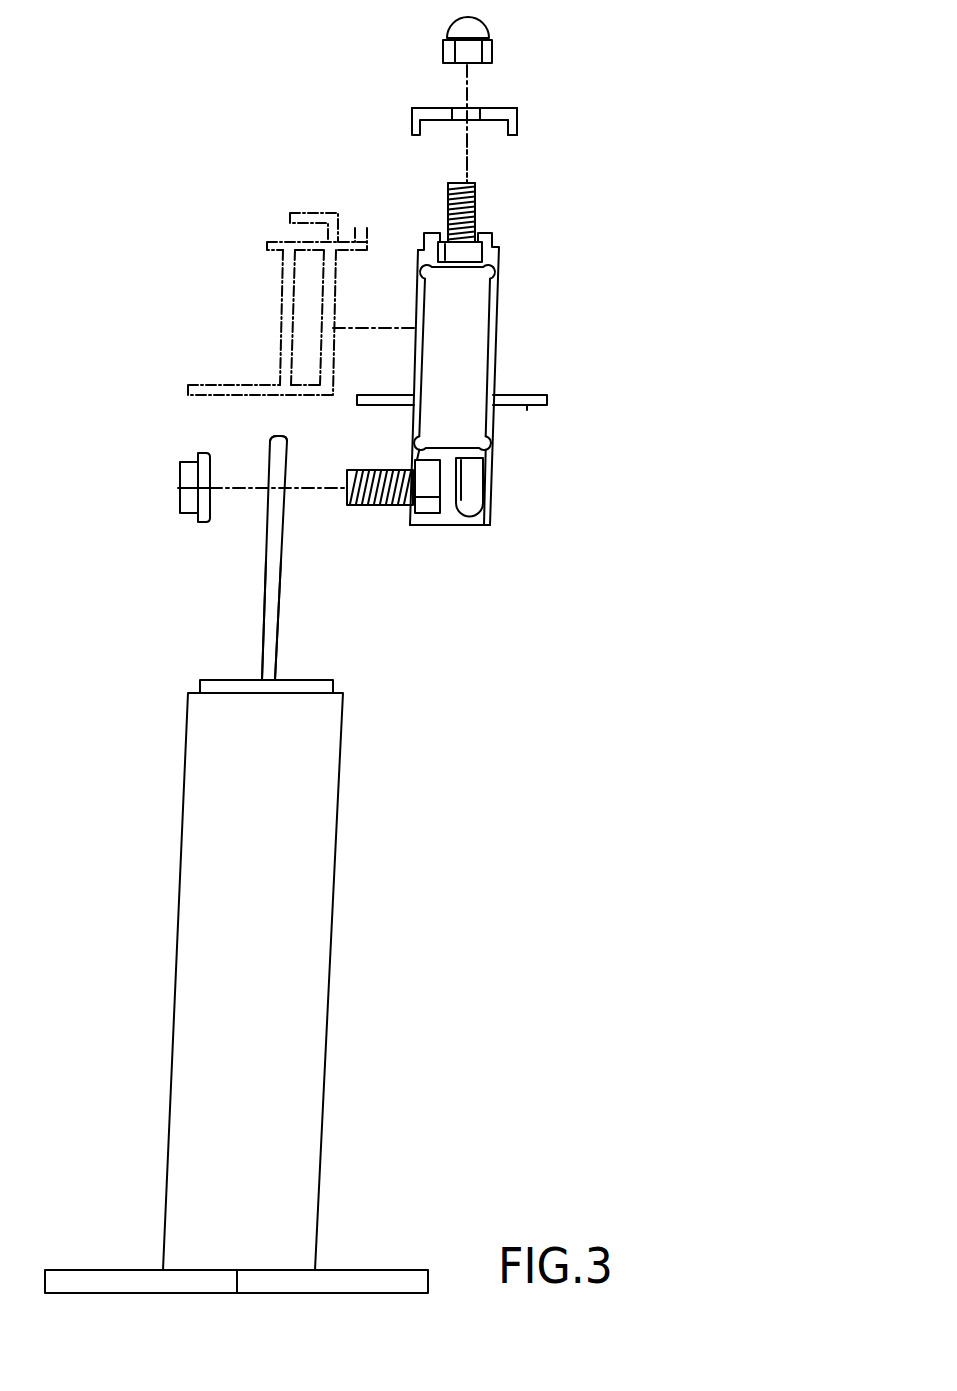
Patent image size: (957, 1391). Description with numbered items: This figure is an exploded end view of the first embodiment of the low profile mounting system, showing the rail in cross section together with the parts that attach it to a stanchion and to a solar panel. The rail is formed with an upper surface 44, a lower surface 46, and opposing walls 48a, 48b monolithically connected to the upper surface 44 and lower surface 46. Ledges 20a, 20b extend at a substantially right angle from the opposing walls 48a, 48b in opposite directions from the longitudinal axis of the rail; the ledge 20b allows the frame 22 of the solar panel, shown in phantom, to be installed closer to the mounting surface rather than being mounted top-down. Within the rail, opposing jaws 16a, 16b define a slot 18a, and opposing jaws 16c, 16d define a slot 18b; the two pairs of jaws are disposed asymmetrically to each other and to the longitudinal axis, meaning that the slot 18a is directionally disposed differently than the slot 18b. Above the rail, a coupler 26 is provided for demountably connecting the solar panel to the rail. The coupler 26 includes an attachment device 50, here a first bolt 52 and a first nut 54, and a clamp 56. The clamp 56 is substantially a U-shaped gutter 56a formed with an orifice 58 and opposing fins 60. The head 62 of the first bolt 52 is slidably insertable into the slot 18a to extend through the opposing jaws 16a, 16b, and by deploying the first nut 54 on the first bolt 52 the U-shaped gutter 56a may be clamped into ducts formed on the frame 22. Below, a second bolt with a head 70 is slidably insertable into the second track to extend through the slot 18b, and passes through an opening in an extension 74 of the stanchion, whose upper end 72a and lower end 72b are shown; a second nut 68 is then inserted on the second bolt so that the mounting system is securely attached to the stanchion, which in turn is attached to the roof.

The coupler 26 is at (576, 103).
The first nut 54 is at (487, 24).
The clamp 56 is at (413, 109).
The U-shaped gutter 56a is at (505, 108).
The orifice 58 is at (460, 110).
The opposing fins 60 is at (517, 119).
The first bolt 52 is at (464, 180).
The attachment device 50 is at (478, 203).
The upper surface 44 is at (483, 240).
The head of first bolt 62 is at (455, 260).
The opposing jaw 16a is at (493, 236).
The opposing jaw 16b is at (440, 232).
The opposing jaw 16c is at (412, 462).
The opposing jaw 16d is at (403, 525).
The slot 18a is at (500, 262).
The slot 18b is at (432, 527).
The opposing wall 48a is at (500, 275).
The opposing wall 48b is at (413, 372).
The head of second bolt 70 is at (431, 470).
The lower surface 46 is at (465, 527).
The ledge 20a is at (533, 393).
The ledge 20b is at (376, 405).
The frame 22 is at (283, 283).
The second nut 68 is at (180, 464).
The extension 74 is at (268, 551).
The rod upper end 72a is at (271, 478).
The rod lower end 72b is at (266, 610).